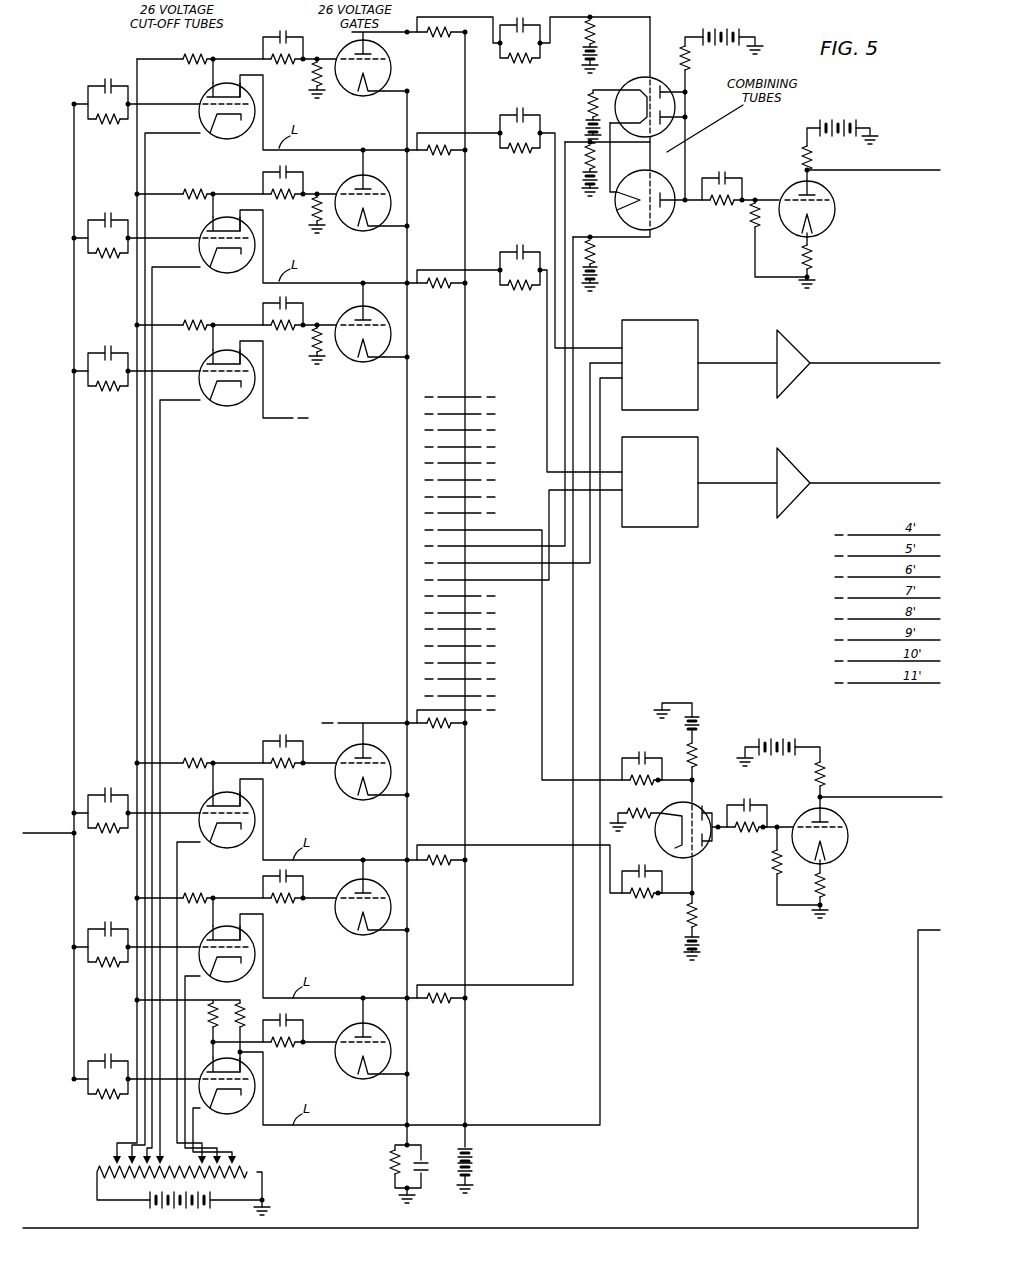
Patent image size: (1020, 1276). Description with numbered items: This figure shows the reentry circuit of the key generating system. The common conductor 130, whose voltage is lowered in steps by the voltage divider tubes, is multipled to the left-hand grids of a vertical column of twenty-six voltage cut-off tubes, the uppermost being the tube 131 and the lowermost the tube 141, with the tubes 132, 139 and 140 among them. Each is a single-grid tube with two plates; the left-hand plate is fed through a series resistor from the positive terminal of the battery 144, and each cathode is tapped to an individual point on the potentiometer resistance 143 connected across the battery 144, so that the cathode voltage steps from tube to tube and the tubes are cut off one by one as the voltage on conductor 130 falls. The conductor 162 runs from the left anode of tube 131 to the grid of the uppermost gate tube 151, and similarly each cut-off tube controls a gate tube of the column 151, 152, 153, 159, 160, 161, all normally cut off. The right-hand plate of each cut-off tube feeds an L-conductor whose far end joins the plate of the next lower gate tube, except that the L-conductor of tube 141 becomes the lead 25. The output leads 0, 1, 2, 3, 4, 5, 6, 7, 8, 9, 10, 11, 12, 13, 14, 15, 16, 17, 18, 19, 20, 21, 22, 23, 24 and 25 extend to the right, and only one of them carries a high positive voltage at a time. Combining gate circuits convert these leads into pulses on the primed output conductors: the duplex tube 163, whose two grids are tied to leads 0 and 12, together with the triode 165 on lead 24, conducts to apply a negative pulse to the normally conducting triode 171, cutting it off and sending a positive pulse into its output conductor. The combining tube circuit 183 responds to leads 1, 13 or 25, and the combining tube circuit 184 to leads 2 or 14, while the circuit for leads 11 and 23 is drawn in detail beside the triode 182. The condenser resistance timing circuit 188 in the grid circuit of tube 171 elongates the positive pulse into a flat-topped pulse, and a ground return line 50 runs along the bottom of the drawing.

The ground return line 50 is at (570, 1227).
The common conductor 130 is at (52, 832).
The voltage cut-off tube 131 is at (224, 141).
The voltage cut-off tube 132 is at (224, 275).
The voltage cut-off tube 139 is at (232, 851).
The voltage cut-off tube 140 is at (257, 957).
The voltage cut-off tube 141 is at (257, 1088).
The potentiometer resistance 143 is at (258, 1168).
The battery 144 is at (150, 1206).
The gate tube 151 is at (393, 62).
The gate tube 152 is at (363, 232).
The gate tube 153 is at (363, 363).
The gate tube 159 is at (362, 803).
The gate tube 160 is at (362, 938).
The gate tube 161 is at (362, 1079).
The conductor 162 is at (219, 58).
The duplex tube 163 is at (640, 78).
The triode 165 is at (663, 226).
The triode 171 is at (831, 225).
The triode 182 is at (845, 852).
The combining tube circuit 183 is at (698, 400).
The combining tube circuit 184 is at (698, 517).
The condenser resistance timing circuit 188 is at (736, 182).
The output lead 0 is at (533, 39).
The output conductor 1 is at (519, 228).
The output lead 2 is at (519, 358).
The output lead 3 is at (467, 397).
The output lead 4 is at (467, 414).
The output lead 5 is at (467, 430).
The output lead 6 is at (467, 447).
The output lead 7 is at (467, 463).
The output lead 8 is at (467, 480).
The output lead 9 is at (467, 497).
The output lead 10 is at (471, 513).
The output lead 11 is at (523, 648).
The output lead 12 is at (495, 344).
The output lead 13 is at (523, 463).
The output lead 14 is at (523, 535).
The output lead 15 is at (470, 596).
The output lead 16 is at (471, 613).
The output lead 17 is at (471, 629).
The output lead 18 is at (471, 646).
The output lead 19 is at (470, 663).
The output lead 20 is at (471, 679).
The output lead 21 is at (470, 696).
The output lead 22 is at (466, 713).
The output lead 23 is at (554, 871).
The output lead 24 is at (495, 621).
The output lead 25 is at (514, 761).